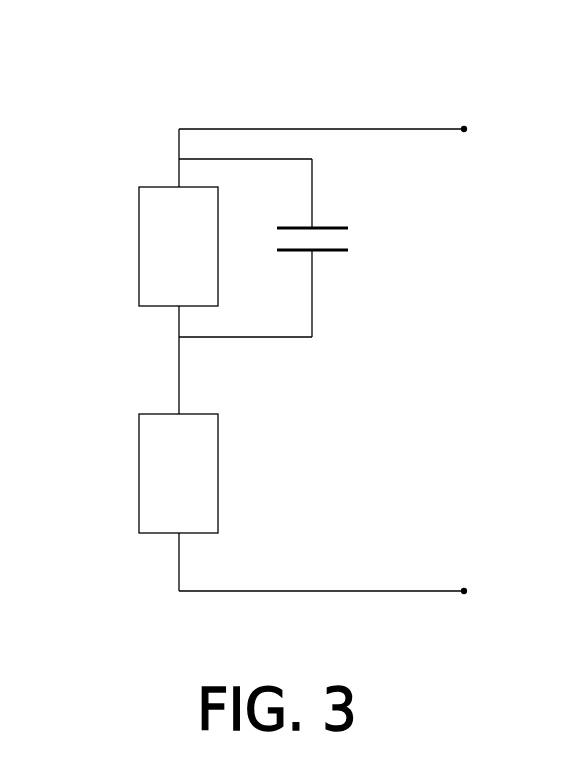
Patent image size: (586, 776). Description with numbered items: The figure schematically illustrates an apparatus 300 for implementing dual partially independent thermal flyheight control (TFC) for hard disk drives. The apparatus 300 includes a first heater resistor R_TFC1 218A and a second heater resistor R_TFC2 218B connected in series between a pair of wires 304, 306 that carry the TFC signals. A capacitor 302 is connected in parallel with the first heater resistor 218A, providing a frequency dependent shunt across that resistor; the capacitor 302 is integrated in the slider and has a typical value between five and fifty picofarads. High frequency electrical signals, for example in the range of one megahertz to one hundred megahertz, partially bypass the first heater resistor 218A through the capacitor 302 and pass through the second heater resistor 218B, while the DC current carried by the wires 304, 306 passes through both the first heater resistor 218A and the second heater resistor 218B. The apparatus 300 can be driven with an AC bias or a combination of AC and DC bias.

The apparatus for implementing dual partially independent flyheight control 300 is at (285, 52).
The wire 304 is at (311, 129).
The wire 306 is at (280, 591).
The capacitor 302 is at (345, 248).
The first heater resistor 218A is at (134, 246).
The second heater resistor 218B is at (134, 473).